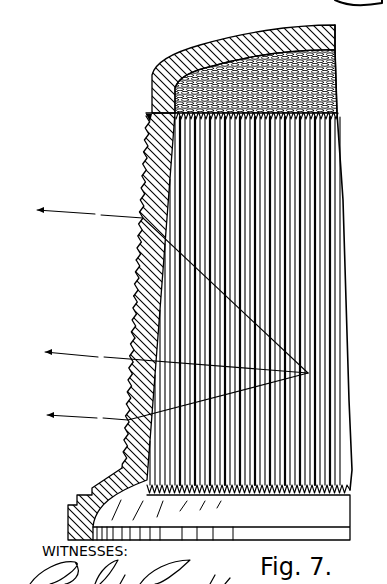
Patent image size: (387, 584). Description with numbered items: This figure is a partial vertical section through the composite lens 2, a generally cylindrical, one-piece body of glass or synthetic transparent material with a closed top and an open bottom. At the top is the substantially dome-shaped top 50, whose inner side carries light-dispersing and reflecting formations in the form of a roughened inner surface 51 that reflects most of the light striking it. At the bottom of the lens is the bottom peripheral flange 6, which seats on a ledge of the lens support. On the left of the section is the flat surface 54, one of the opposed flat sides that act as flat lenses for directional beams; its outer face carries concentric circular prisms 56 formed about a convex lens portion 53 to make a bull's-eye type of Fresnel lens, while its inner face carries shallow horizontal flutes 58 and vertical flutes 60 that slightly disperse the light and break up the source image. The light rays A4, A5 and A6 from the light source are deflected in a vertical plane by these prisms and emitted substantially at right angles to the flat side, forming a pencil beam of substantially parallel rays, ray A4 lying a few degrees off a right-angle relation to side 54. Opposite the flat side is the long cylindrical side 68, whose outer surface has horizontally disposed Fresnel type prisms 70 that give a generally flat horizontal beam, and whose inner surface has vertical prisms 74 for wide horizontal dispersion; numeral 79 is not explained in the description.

The composite lens 2 is at (105, 120).
The bottom peripheral flange 6 is at (72, 520).
The dome-shaped top 50 is at (222, 45).
The roughened inner surface 51 is at (338, 51).
The convex lens portion 53 is at (131, 366).
The flat surface 54 is at (135, 279).
The concentric circular prisms 56 is at (137, 250).
The horizontal flutes 58 is at (134, 320).
The vertical flutes 60 is at (128, 453).
The long cylindrical side 68 is at (147, 152).
The Fresnel type prisms 70 is at (143, 197).
The vertical prisms 74 is at (317, 173).
The rib 79 is at (379, 300).
The light ray A4 is at (165, 356).
The light ray A5 is at (163, 286).
The light ray A6 is at (168, 398).